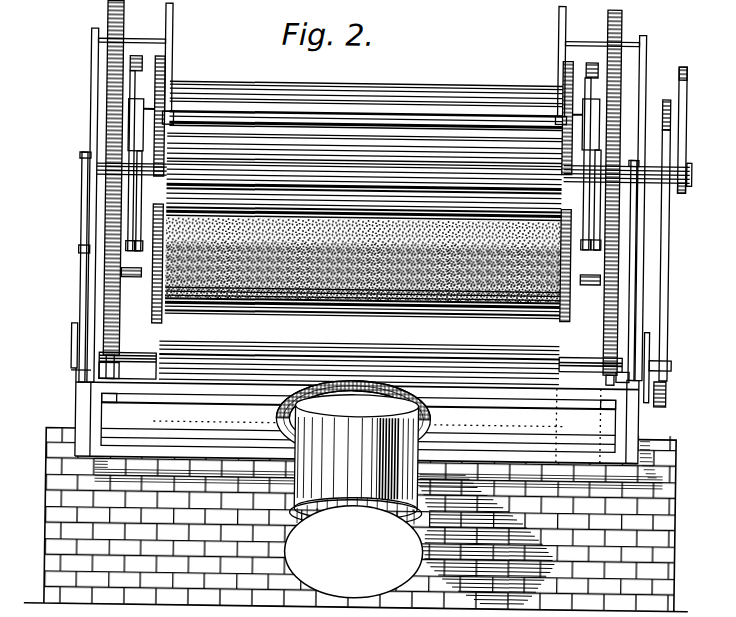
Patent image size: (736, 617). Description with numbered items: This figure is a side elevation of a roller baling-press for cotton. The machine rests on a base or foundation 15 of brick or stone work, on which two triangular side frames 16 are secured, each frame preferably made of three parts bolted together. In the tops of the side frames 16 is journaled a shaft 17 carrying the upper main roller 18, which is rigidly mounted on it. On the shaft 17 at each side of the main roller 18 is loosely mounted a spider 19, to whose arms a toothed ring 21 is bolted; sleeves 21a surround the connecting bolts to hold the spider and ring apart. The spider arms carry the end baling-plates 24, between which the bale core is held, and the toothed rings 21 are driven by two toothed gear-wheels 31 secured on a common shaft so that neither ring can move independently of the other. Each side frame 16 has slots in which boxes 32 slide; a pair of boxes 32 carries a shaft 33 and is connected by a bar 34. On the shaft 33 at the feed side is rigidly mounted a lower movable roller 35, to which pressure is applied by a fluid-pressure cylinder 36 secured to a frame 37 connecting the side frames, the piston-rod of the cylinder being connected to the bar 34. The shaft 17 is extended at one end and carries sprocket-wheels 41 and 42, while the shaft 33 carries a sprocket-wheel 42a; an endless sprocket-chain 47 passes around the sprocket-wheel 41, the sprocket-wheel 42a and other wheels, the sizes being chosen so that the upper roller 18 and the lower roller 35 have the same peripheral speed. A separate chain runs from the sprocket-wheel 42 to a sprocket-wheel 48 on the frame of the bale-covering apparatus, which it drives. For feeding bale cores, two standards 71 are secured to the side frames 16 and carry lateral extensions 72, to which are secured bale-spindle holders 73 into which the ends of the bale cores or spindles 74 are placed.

The base or foundation 15 is at (50, 498).
The triangular side frame 16 is at (80, 280).
The shaft 17 is at (690, 165).
The upper main roller 18 is at (273, 82).
The spider 19 is at (130, 190).
The toothed ring 21 is at (618, 14).
The sleeve 21a is at (128, 62).
The end baling-plate 24 is at (575, 299).
The toothed gear-wheel 31 is at (114, 344).
The box 32 is at (72, 330).
The shaft 33 is at (570, 356).
The bar 34 is at (357, 402).
The lower movable roller 35 is at (363, 279).
The fluid-pressure cylinder 36 is at (354, 496).
The frame 37 is at (626, 424).
The sprocket-wheel 41 is at (668, 105).
The sprocket-wheel 42 is at (688, 183).
The sprocket-wheel 42a is at (668, 383).
The endless sprocket-chain 47 is at (668, 260).
The sprocket-wheel 48 is at (686, 66).
The standard 71 is at (88, 80).
The lateral extension 72 is at (138, 38).
The bale-spindle holder 73 is at (170, 43).
The bale core or spindle 74 is at (450, 115).